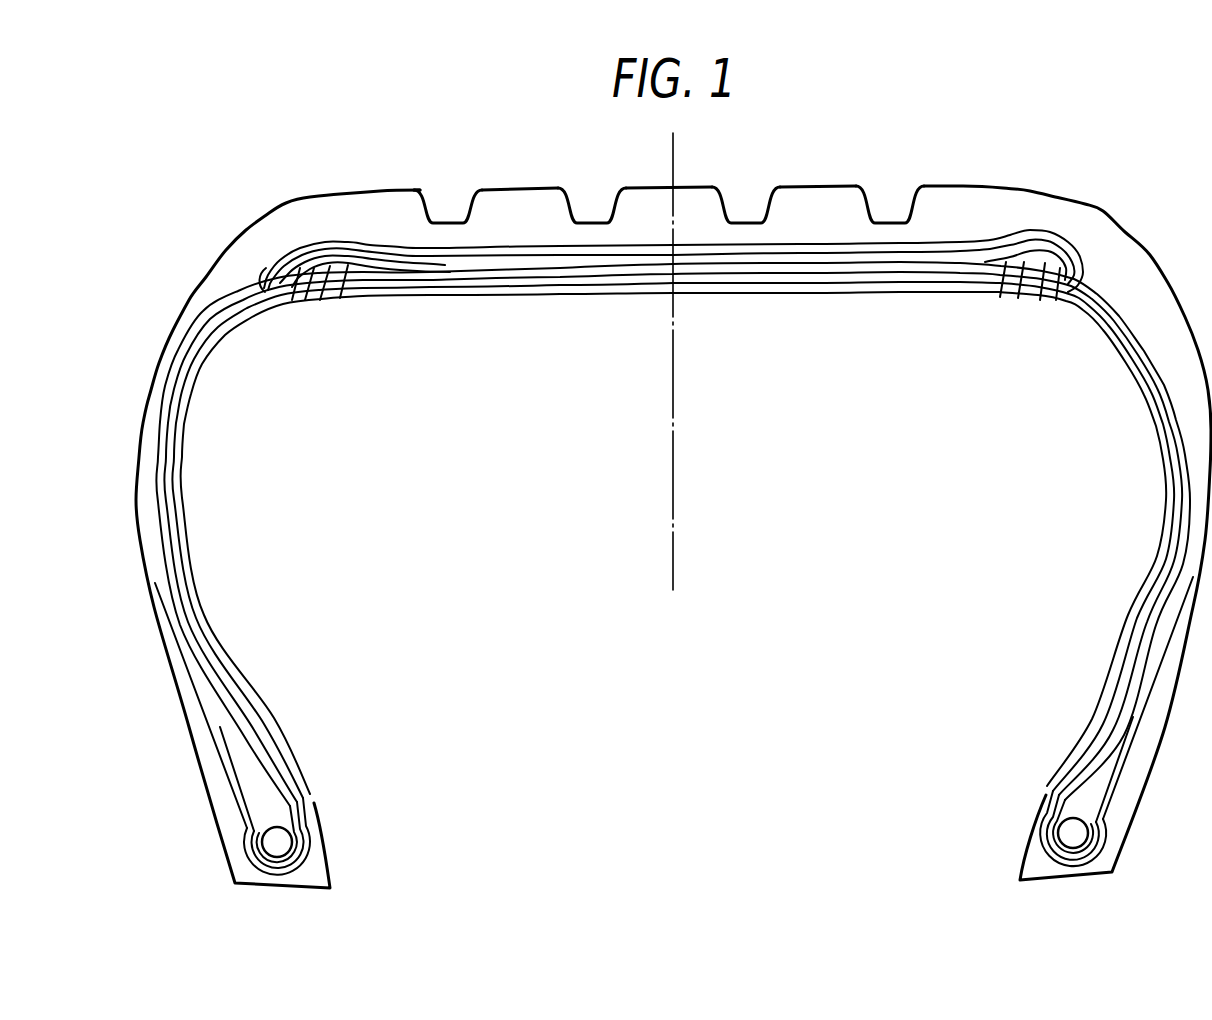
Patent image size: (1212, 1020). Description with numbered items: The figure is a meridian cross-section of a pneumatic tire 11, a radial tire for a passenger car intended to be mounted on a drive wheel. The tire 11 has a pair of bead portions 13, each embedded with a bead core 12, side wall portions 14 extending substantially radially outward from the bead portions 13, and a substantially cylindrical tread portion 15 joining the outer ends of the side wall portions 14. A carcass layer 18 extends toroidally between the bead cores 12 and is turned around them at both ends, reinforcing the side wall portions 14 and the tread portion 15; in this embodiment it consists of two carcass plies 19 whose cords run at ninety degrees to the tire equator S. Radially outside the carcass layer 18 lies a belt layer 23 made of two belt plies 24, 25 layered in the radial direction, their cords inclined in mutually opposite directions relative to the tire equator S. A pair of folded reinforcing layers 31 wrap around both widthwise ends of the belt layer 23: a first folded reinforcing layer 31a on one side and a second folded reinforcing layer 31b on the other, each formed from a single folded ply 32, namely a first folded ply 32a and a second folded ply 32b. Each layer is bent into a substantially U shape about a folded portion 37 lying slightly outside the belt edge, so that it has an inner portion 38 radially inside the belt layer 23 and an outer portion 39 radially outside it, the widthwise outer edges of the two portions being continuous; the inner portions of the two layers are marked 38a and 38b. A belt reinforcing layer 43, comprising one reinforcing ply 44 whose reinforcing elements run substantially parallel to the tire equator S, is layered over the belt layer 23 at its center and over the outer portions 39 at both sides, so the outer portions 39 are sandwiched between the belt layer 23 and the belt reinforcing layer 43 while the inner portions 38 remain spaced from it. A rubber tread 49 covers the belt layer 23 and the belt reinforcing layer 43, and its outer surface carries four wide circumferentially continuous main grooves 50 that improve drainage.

The pneumatic tire 11 is at (798, 168).
The bead core 12 is at (280, 843).
The bead portion 13 is at (313, 806).
The side wall portion 14 is at (192, 531).
The tread portion 15 is at (521, 182).
The carcass layer 18 is at (186, 453).
The carcass ply 19 is at (218, 364).
The belt layer 23 is at (769, 275).
The belt ply 24 is at (867, 262).
The belt ply 25 is at (821, 258).
The folded reinforcing layer 31 is at (298, 307).
The first folded reinforcing layer 31a is at (322, 317).
The second folded reinforcing layer 31b is at (1047, 297).
The folded ply 32 is at (1020, 267).
The first folded ply 32a is at (337, 300).
The second folded ply 32b is at (1003, 265).
The folded portion 37 is at (263, 293).
The inner portion 38 is at (278, 307).
The inner portion of first folded reinforcing layer 38a is at (360, 303).
The inner portion of second folded reinforcing layer 38b is at (1073, 301).
The outer portion 39 is at (313, 247).
The belt reinforcing layer 43 is at (467, 247).
The reinforcing ply 44 is at (876, 250).
The tread 49 is at (630, 202).
The main groove 50 is at (914, 203).
The tire equator S is at (674, 160).